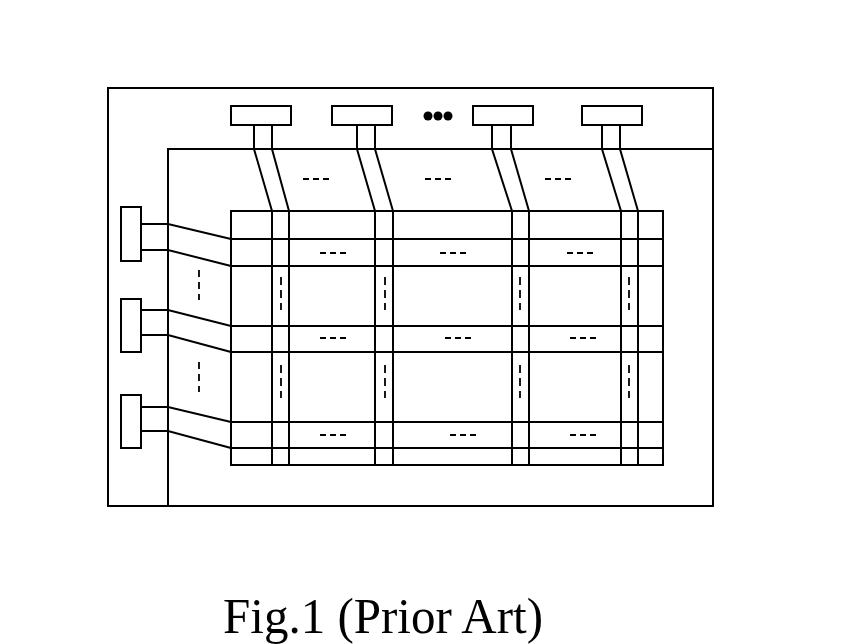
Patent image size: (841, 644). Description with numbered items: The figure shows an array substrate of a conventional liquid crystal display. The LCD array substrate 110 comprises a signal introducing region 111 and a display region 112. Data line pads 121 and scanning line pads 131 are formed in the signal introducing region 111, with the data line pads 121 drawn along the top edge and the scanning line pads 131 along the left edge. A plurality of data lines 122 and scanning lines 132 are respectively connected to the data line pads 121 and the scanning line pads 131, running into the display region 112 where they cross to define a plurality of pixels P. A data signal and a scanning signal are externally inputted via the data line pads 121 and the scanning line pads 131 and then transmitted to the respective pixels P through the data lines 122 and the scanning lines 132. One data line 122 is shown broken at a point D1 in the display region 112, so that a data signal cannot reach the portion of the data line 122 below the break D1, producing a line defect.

The LCD array substrate 110 is at (90, 80).
The signal introducing region 111 is at (672, 133).
The display region 112 is at (565, 400).
The data line pads 121 is at (358, 116).
The data lines 122 is at (377, 275).
The scanning line pads 131 is at (135, 423).
The scanning lines 132 is at (368, 448).
The break point D1 is at (362, 305).